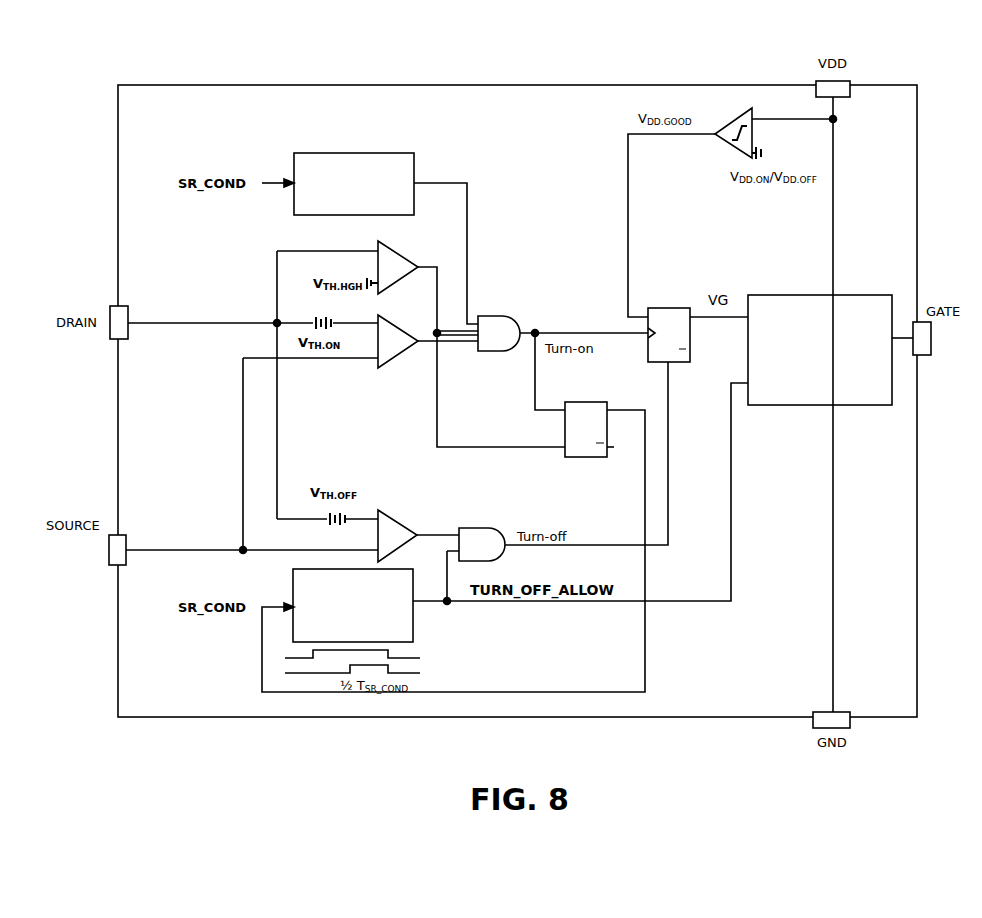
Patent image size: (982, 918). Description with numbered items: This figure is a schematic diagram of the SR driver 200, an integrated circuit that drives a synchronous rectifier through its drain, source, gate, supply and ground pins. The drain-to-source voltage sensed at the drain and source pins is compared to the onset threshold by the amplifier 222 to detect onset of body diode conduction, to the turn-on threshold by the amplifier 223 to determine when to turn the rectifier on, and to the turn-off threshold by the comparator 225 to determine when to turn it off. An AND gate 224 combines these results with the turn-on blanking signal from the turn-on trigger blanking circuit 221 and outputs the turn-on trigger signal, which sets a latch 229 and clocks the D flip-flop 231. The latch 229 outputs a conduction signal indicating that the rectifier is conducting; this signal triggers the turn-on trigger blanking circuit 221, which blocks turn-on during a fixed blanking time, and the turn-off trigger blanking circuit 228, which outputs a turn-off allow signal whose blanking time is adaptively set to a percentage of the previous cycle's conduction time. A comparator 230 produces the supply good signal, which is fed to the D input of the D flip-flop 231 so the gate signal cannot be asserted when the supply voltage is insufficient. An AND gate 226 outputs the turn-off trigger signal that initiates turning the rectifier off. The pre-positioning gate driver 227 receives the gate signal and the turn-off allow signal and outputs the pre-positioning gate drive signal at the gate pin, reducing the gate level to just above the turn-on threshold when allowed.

The SR driver 200 is at (312, 84).
The turn-on trigger blanking circuit 221 is at (315, 153).
The amplifier 222 is at (404, 250).
The amplifier 223 is at (387, 361).
The AND gate 224 is at (494, 316).
The comparator 225 is at (394, 516).
The AND gate 226 is at (476, 528).
The pre-positioning gate driver 227 is at (797, 295).
The turn-off trigger blanking circuit 228 is at (413, 630).
The latch 229 is at (592, 457).
The comparator 230 is at (727, 147).
The D flip-flop 231 is at (657, 308).